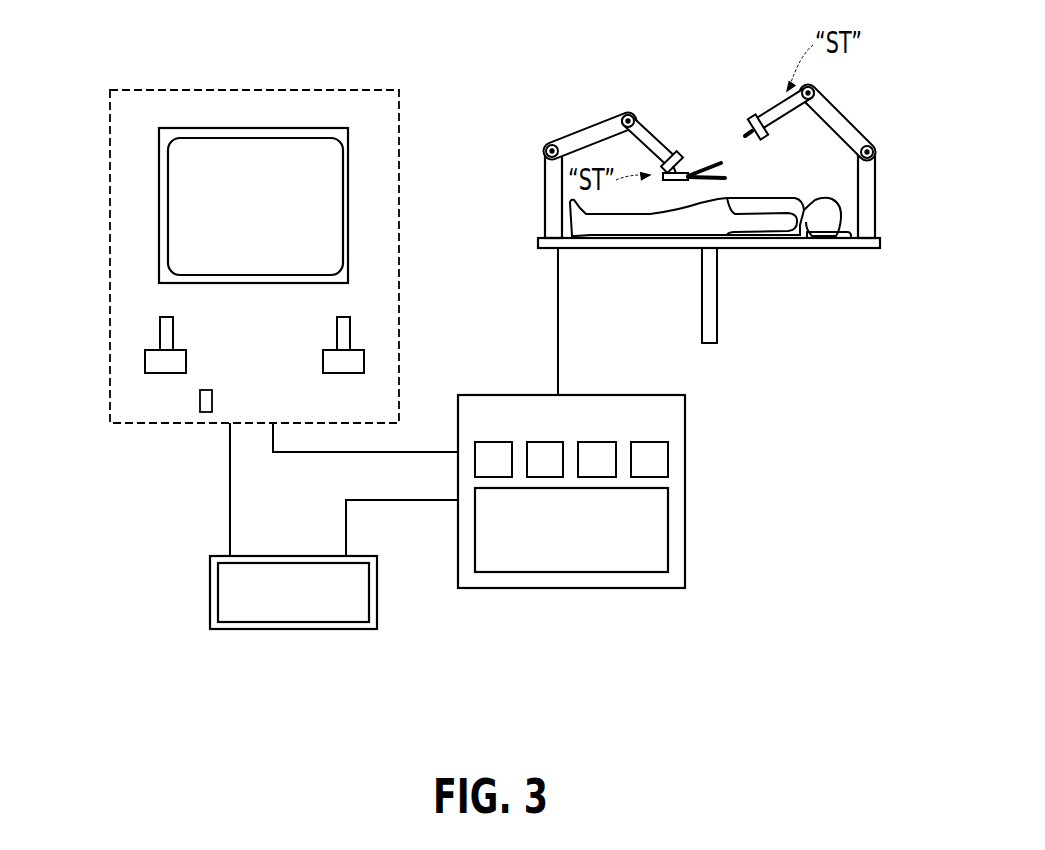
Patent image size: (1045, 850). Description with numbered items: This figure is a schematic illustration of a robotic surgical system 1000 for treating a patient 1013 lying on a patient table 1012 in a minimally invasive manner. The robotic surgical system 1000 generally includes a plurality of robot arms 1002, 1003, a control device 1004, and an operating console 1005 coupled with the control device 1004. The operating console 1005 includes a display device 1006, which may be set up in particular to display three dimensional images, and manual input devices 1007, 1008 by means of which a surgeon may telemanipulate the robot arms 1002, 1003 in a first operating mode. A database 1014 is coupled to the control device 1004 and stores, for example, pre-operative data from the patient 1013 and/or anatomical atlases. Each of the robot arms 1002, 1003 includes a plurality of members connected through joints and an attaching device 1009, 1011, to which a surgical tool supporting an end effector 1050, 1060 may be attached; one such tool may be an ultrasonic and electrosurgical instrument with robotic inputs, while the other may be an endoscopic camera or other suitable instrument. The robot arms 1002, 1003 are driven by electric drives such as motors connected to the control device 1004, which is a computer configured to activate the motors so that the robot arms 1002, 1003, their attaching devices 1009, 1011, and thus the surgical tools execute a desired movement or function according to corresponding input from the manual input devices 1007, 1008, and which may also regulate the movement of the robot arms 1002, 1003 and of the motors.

The robotic surgical system 1000 is at (758, 385).
The robot arm 1002 is at (559, 128).
The robot arm 1003 is at (849, 106).
The control device 1004 is at (599, 543).
The operating console 1005 is at (168, 76).
The display device 1006 is at (283, 218).
The manual input device 1007 is at (145, 358).
The manual input device 1008 is at (364, 358).
The attaching device 1009 is at (683, 150).
The attaching device 1011 is at (755, 116).
The patient table 1012 is at (662, 249).
The patient 1013 is at (797, 228).
The database 1014 is at (323, 608).
The end effector 1050 is at (710, 164).
The end effector 1060 is at (749, 127).